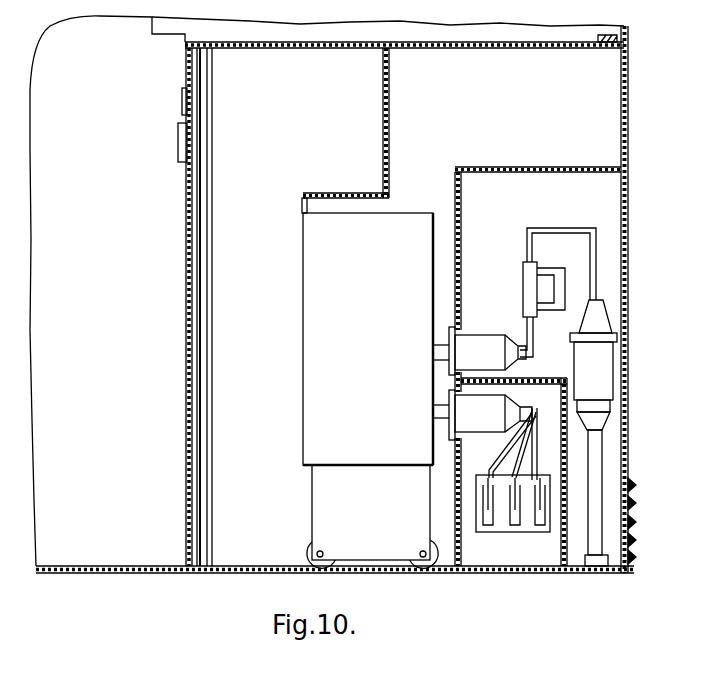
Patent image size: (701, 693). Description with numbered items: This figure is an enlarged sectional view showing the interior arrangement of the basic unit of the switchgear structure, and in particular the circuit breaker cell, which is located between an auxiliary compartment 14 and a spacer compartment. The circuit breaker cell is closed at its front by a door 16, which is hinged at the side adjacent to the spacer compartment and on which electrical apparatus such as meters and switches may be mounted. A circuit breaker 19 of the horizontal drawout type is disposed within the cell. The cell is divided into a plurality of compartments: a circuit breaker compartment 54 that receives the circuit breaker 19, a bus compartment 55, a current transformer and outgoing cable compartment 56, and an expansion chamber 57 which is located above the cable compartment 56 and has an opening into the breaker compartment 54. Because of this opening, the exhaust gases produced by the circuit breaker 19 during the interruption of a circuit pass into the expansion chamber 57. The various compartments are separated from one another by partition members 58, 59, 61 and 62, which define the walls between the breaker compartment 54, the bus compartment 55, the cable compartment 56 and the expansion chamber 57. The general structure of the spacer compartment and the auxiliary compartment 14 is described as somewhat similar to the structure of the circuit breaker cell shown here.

The auxiliary compartment 14 is at (628, 264).
The door 16 is at (187, 278).
The circuit breaker 19 is at (303, 353).
The circuit breaker compartment 54 is at (432, 196).
The bus compartment 55 is at (507, 560).
The current transformer and outgoing cable compartment 56 is at (570, 213).
The expansion chamber 57 is at (544, 127).
The partition member 58 is at (389, 158).
The partition member 59 is at (588, 167).
The partition member 61 is at (462, 247).
The partition member 62 is at (561, 456).